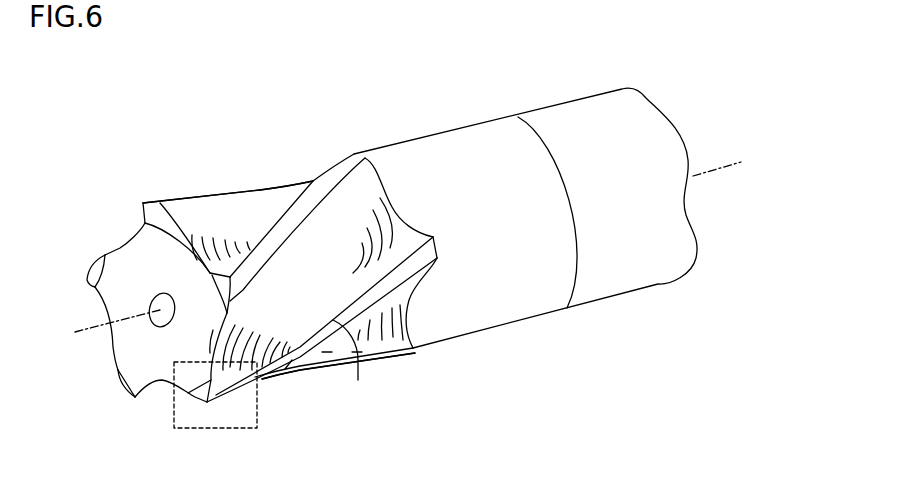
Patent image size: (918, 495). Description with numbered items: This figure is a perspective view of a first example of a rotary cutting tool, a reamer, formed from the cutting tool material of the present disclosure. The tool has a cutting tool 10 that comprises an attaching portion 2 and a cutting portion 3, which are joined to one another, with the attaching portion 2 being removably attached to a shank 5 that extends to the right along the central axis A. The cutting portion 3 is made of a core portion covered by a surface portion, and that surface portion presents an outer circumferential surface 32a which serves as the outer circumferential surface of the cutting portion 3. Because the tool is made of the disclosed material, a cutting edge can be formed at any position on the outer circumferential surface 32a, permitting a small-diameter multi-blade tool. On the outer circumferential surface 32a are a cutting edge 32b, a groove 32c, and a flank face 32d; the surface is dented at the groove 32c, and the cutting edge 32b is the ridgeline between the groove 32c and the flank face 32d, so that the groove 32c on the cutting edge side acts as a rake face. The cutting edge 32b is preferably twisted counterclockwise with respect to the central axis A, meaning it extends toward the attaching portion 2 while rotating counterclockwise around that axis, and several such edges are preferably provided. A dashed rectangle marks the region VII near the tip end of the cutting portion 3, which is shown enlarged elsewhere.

The attaching portion 2 is at (413, 150).
The cutting portion 3 is at (243, 200).
The shank 5 is at (615, 282).
The cutting tool 10 is at (224, 119).
The outer circumferential surface 32a is at (273, 405).
The cutting edge 32b is at (358, 347).
The groove 32c is at (327, 350).
The flank face 32d is at (297, 352).
The central axis A is at (106, 329).
The region VII is at (215, 407).